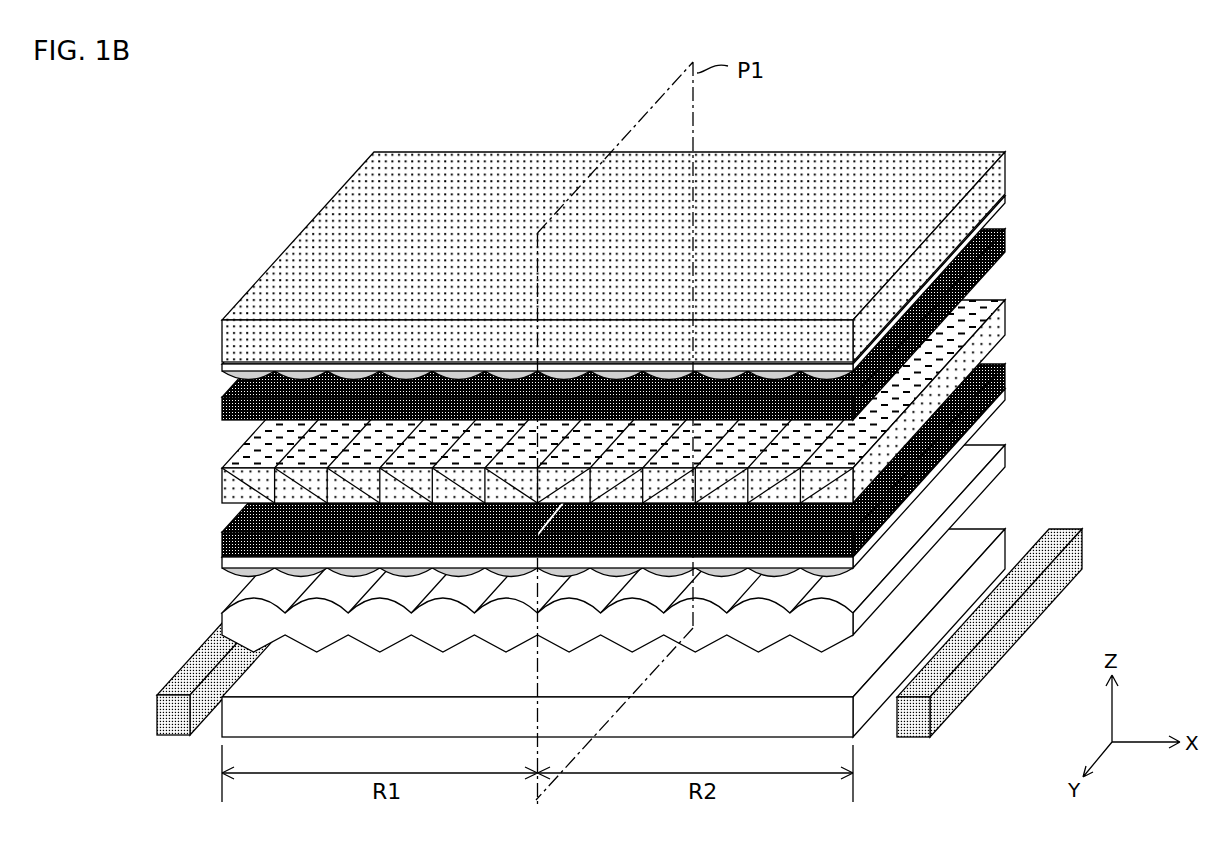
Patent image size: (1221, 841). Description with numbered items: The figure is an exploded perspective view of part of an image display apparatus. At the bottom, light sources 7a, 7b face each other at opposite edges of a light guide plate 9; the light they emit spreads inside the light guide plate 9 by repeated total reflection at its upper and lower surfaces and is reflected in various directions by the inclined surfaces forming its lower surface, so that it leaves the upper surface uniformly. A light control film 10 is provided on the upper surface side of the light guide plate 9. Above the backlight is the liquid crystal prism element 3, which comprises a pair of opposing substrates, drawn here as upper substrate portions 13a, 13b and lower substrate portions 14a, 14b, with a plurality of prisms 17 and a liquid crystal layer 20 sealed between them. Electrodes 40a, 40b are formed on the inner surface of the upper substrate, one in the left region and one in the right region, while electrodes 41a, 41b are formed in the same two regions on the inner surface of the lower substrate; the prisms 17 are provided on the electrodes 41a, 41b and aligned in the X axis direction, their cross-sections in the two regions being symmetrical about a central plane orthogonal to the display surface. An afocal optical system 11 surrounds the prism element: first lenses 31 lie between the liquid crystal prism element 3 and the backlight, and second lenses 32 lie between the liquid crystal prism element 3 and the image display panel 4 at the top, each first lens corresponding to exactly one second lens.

The image display panel 4 is at (1008, 167).
The second lenses 32 is at (1008, 212).
The first lenses 31 is at (997, 422).
The afocal optical system 11 is at (1094, 201).
The first polarizing layer portion 13a is at (581, 328).
The second polarizing layer portion 13b is at (620, 320).
The electrode 40a is at (222, 418).
The electrode 40b is at (618, 328).
The liquid crystal prism element 3 is at (609, 394).
The liquid crystal layer 20 is at (582, 401).
The prisms 17 is at (582, 401).
The first polarizing layer portion 14a is at (581, 463).
The second polarizing layer portion 14b is at (620, 453).
The electrode 41a is at (581, 463).
The electrode 41b is at (614, 463).
The light control film 10 is at (993, 460).
The light guide plate 9 is at (983, 525).
The light source 7a is at (185, 737).
The light source 7b is at (915, 738).